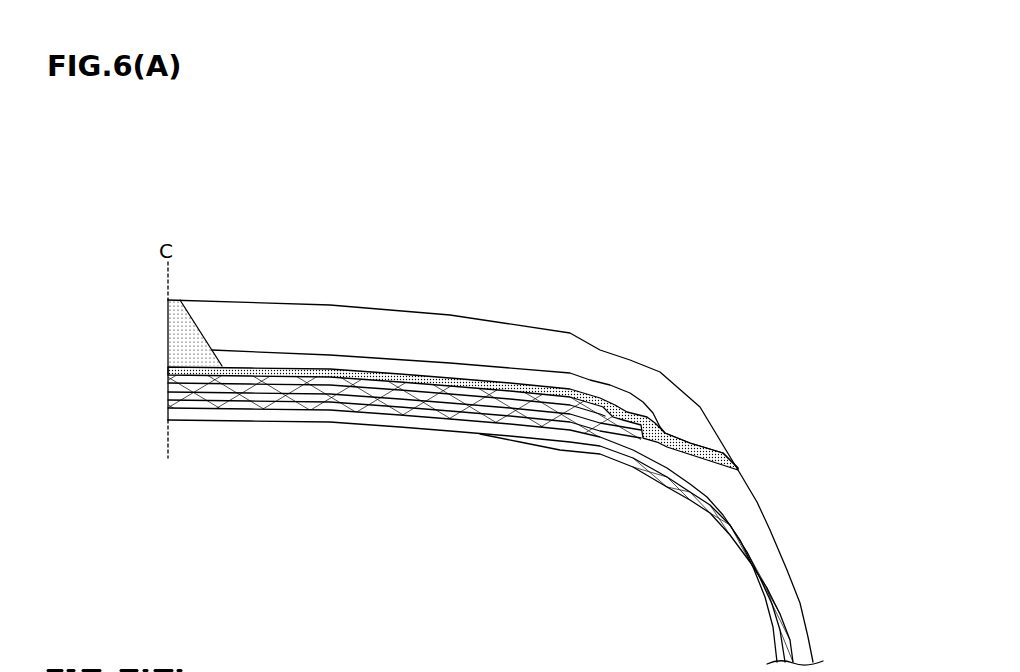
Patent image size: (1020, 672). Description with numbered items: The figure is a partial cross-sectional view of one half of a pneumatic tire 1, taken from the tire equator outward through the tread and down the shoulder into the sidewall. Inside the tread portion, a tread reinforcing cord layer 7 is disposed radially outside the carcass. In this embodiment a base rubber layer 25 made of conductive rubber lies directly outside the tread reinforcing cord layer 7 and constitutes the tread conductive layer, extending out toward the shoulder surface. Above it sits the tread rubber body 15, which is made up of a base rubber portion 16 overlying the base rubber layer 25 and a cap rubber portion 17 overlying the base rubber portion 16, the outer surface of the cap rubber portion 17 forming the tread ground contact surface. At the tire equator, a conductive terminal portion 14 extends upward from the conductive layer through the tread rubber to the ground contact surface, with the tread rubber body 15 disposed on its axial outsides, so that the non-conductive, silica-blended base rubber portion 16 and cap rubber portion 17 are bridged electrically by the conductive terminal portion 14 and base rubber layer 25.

The pneumatic tire 1 is at (672, 350).
The tread reinforcing cord layer 7 is at (163, 373).
The conductive terminal portion 14 is at (187, 343).
The tread rubber body 15 is at (467, 213).
The base rubber portion 16 is at (440, 376).
The cap rubber portion 17 is at (384, 328).
The base rubber layer 25 is at (543, 388).